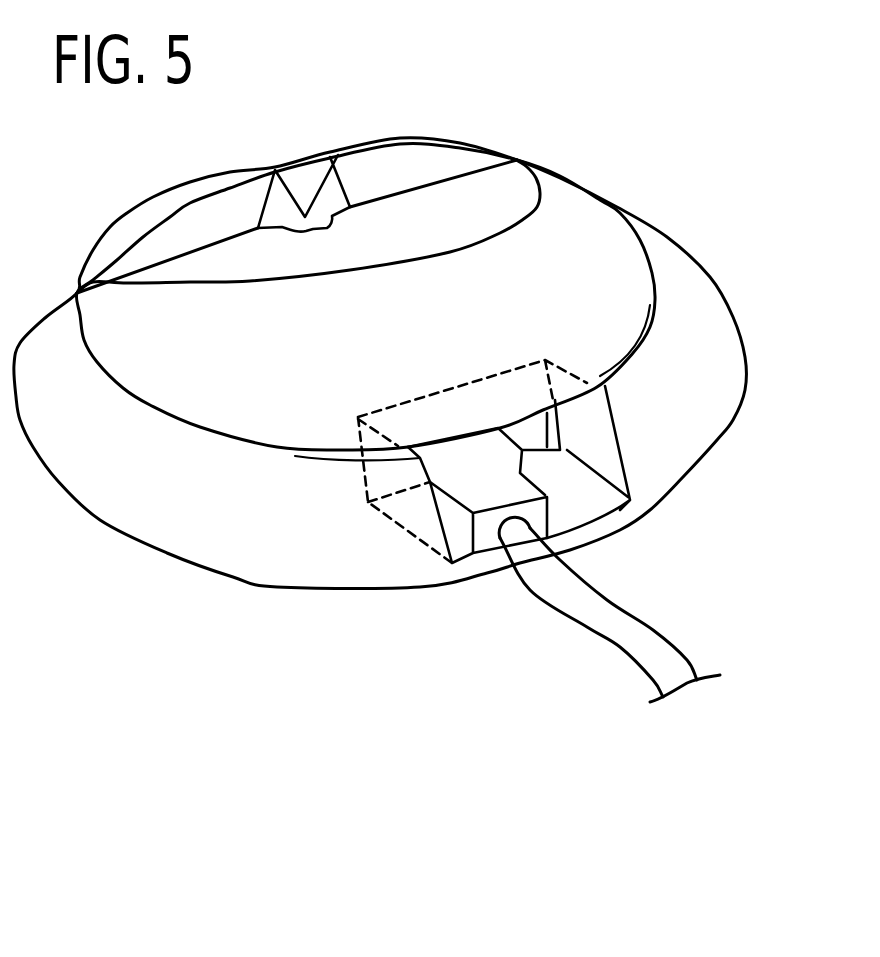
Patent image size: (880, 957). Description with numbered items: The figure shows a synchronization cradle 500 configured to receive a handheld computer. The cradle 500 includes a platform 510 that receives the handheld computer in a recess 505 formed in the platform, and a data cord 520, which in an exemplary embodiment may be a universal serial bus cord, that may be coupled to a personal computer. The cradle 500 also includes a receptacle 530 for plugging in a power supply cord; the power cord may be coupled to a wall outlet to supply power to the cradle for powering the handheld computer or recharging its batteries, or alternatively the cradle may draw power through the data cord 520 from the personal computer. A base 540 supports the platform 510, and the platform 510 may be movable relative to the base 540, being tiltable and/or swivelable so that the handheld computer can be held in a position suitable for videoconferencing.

The synchronization cradle 500 is at (214, 696).
The recess 505 is at (347, 207).
The platform 510 is at (600, 245).
The data cord 520 is at (605, 623).
The receptacle 530 is at (567, 449).
The base 540 is at (88, 470).